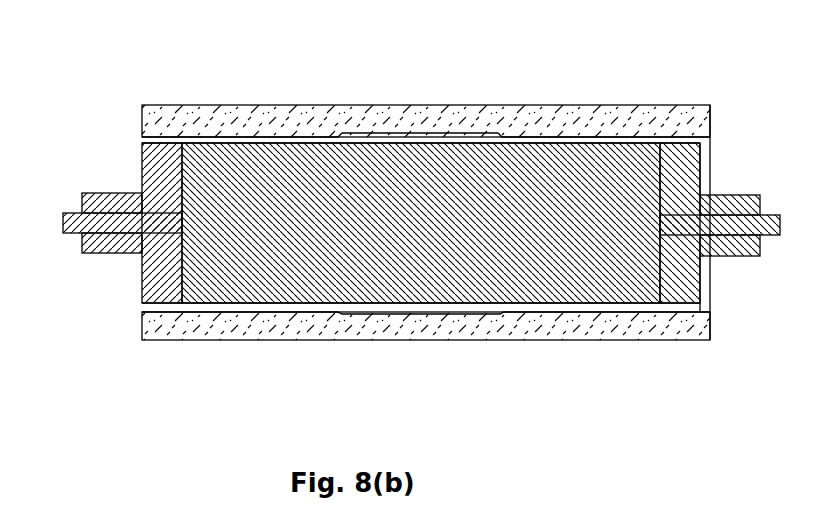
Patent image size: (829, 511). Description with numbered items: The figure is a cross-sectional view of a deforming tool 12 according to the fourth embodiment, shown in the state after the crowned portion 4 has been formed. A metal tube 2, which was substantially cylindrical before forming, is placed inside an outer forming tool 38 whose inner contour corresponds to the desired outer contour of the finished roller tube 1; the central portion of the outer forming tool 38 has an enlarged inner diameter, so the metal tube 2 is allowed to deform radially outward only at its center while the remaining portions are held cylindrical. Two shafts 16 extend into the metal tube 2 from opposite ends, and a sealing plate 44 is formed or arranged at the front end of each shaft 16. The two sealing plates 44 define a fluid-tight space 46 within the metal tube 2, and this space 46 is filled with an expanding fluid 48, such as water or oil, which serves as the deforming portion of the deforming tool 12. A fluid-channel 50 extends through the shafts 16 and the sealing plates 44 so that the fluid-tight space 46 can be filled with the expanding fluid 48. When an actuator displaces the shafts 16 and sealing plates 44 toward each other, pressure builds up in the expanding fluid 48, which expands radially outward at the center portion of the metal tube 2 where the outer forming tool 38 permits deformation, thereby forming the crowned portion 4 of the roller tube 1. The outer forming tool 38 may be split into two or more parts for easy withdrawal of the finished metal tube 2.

The roller tube 1 is at (185, 121).
The metal tube 2 is at (691, 112).
The crowned portion 4 is at (425, 140).
The deforming tool 12 is at (406, 217).
The shaft 16 is at (103, 236).
The outer forming tool 38 is at (625, 126).
The sealing plate 44 is at (160, 280).
The fluid-tight space 46 is at (315, 262).
The expanding fluid 48 is at (460, 268).
The fluid-channel 50 is at (100, 210).